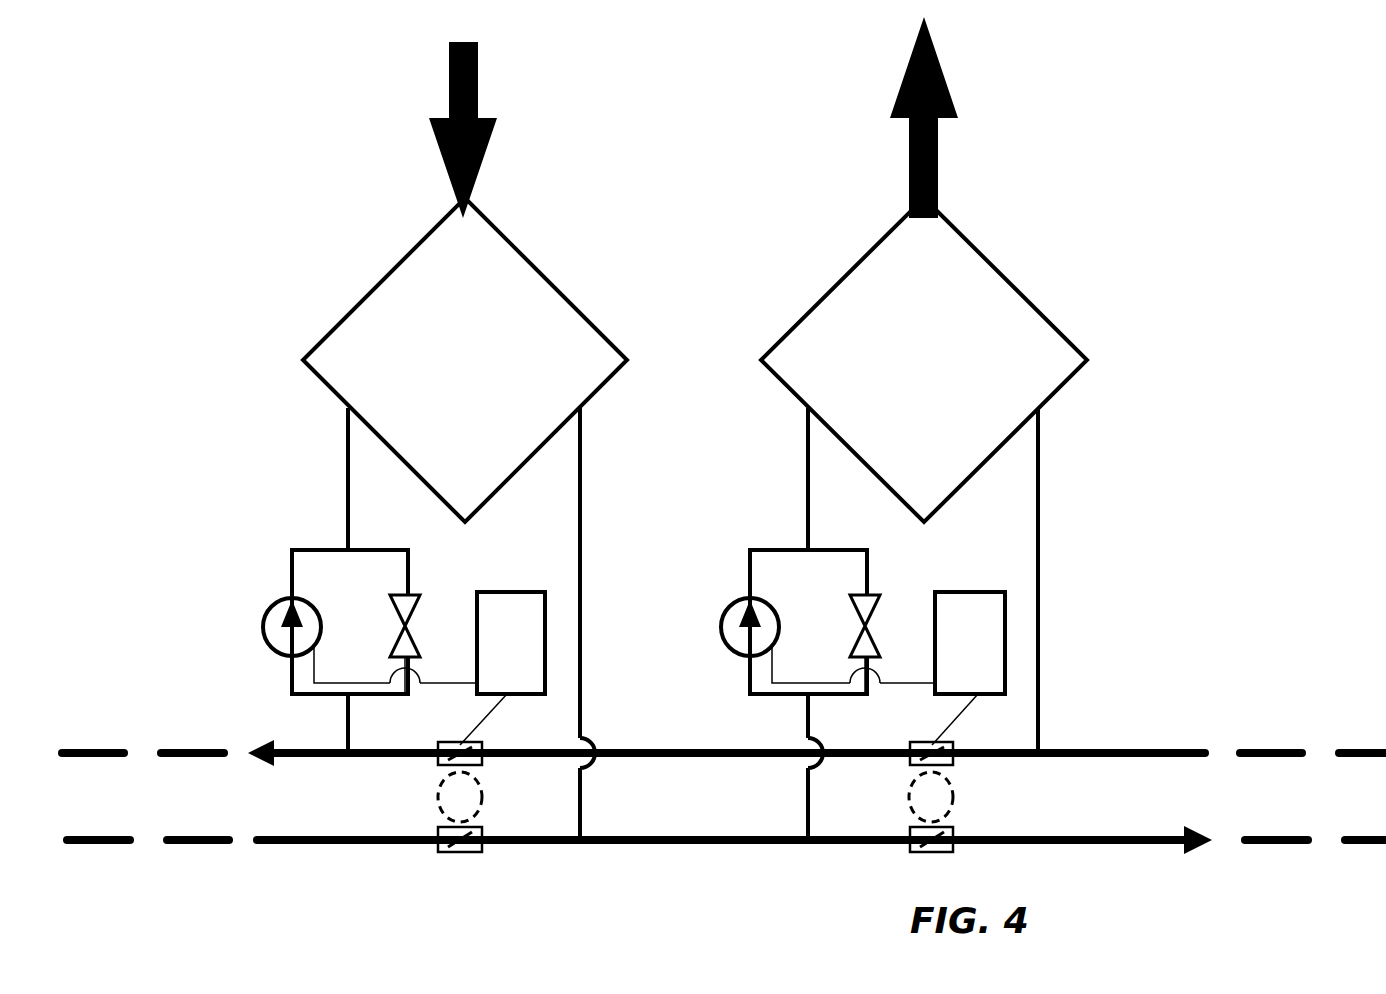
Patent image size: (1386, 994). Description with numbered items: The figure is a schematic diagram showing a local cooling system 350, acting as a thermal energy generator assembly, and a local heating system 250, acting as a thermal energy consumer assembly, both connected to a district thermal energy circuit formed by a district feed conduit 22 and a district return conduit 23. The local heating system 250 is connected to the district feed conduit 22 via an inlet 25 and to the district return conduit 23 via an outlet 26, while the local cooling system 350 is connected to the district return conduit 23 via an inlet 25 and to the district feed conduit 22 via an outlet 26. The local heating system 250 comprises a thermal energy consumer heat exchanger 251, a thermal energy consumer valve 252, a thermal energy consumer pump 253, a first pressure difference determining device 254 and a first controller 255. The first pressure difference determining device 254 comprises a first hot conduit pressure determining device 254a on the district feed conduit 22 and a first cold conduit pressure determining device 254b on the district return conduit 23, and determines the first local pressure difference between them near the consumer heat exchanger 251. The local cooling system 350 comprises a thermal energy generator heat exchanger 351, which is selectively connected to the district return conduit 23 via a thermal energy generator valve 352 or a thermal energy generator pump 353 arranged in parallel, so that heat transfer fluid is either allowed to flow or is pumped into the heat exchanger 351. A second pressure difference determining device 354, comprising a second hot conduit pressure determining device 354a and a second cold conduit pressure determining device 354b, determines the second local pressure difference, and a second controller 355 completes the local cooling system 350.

The district feed conduit 22 is at (555, 843).
The district return conduit 23 is at (690, 757).
The inlet 25 is at (340, 723).
The outlet 26 is at (580, 688).
The local heating system 250 is at (1055, 235).
The thermal energy consumer heat exchanger 251 is at (857, 310).
The thermal energy consumer valve 252 is at (868, 598).
The thermal energy consumer pump 253 is at (733, 617).
The first pressure difference determining device 254 is at (943, 800).
The first hot conduit pressure determining device 254a is at (910, 850).
The first cold conduit pressure determining device 254b is at (945, 742).
The first controller 255 is at (972, 605).
The local cooling system 350 is at (580, 215).
The thermal energy generator heat exchanger 351 is at (398, 300).
The thermal energy generator valve 352 is at (420, 597).
The thermal energy generator pump 353 is at (272, 620).
The second pressure difference determining device 354 is at (437, 820).
The second hot conduit pressure determining device 354a is at (438, 850).
The second cold conduit pressure determining device 354b is at (482, 765).
The second controller 355 is at (513, 603).